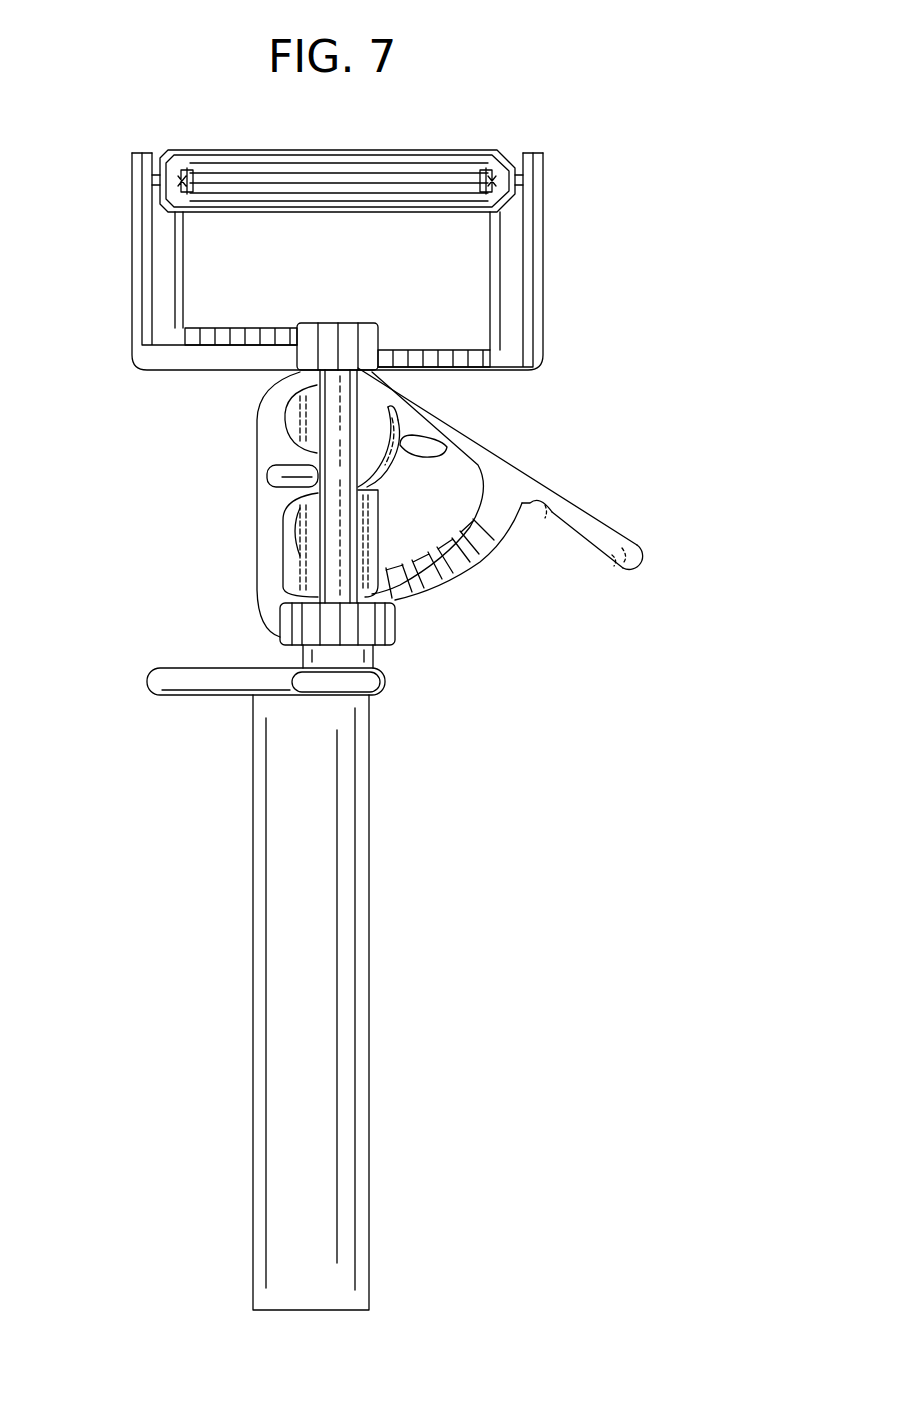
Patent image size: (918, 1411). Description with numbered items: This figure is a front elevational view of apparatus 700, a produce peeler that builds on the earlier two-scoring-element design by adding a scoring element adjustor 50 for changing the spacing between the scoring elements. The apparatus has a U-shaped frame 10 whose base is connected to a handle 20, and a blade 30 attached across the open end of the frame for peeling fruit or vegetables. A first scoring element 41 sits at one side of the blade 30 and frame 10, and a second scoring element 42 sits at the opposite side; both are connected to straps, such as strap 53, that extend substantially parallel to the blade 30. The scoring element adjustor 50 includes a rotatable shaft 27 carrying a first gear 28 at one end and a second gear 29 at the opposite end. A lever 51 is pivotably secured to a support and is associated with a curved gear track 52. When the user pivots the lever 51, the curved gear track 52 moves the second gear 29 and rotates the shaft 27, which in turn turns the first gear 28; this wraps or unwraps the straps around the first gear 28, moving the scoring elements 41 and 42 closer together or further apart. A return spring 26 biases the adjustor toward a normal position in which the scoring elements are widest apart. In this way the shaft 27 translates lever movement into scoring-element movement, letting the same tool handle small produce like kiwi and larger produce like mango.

The apparatus 700 is at (520, 68).
The U-shaped frame 10 is at (130, 280).
The blade 30 is at (357, 150).
The first scoring element 41 is at (190, 165).
The second scoring element 42 is at (480, 167).
The strap 53 is at (433, 348).
The first gear 28 is at (327, 323).
The scoring element adjustor 50 is at (220, 400).
The rotatable shaft 27 is at (270, 568).
The return spring 26 is at (403, 440).
The lever 51 is at (630, 533).
The curved gear track 52 is at (467, 590).
The second gear 29 is at (380, 633).
The handle 20 is at (355, 1043).